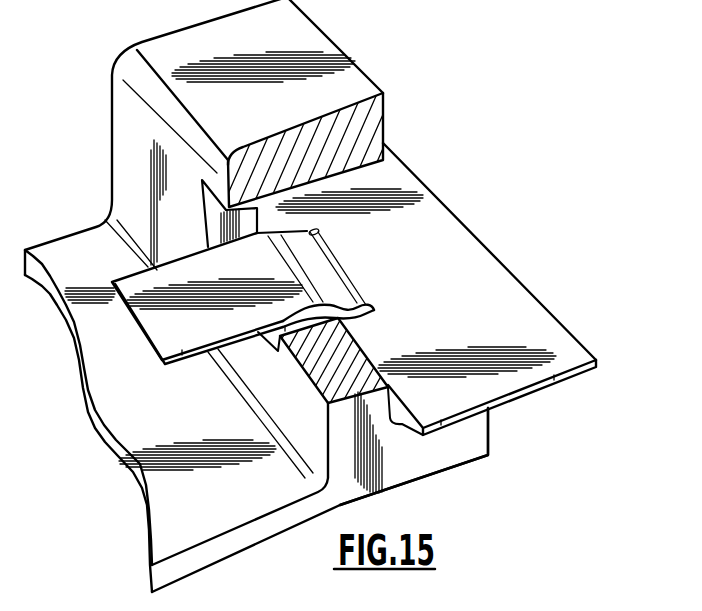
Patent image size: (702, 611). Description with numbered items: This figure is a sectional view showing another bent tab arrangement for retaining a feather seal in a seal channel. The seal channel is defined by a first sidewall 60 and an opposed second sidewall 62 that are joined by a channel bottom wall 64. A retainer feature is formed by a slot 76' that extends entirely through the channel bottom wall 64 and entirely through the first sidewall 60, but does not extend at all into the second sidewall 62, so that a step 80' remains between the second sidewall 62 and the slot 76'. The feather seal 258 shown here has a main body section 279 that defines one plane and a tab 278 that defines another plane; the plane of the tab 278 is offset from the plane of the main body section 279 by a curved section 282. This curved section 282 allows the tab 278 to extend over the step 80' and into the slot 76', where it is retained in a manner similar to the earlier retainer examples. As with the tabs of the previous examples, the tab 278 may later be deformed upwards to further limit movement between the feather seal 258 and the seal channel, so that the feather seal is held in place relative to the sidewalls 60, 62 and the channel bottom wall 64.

The first sidewall 60 is at (343, 88).
The second sidewall 62 is at (471, 437).
The channel bottom wall 64 is at (125, 153).
The slot 76' is at (235, 213).
The step 80' is at (346, 301).
The feather seal 258 is at (448, 230).
The tab 278 is at (143, 313).
The main body section 279 is at (543, 328).
The curved section 282 is at (315, 268).